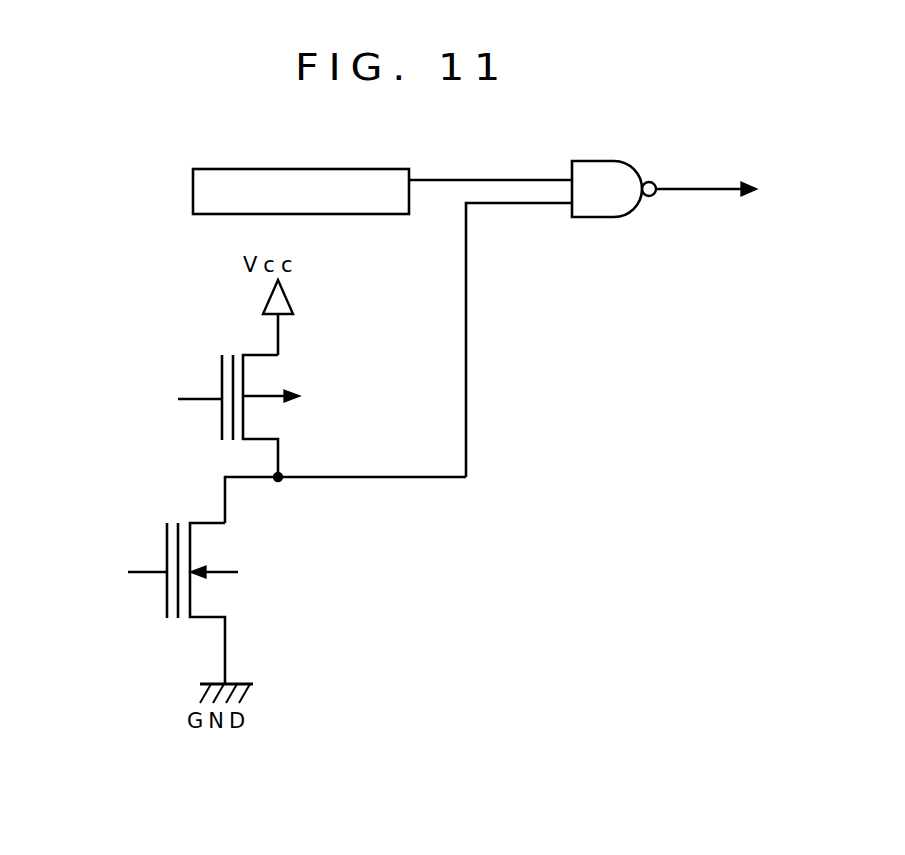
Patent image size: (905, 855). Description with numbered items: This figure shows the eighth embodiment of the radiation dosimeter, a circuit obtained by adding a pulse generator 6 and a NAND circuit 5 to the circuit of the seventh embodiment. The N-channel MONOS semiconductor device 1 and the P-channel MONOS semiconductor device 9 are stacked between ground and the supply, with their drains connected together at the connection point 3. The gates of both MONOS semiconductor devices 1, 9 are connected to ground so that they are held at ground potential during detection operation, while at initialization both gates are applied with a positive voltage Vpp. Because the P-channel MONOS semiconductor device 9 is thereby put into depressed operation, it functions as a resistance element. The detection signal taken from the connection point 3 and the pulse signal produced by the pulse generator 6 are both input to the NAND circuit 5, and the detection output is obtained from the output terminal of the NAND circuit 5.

The N-channel MONOS semiconductor device 1 is at (156, 614).
The connection point 3 is at (280, 481).
The NAND circuit 5 is at (605, 161).
The pulse generator 6 is at (335, 169).
The P-channel MONOS semiconductor device 9 is at (320, 383).